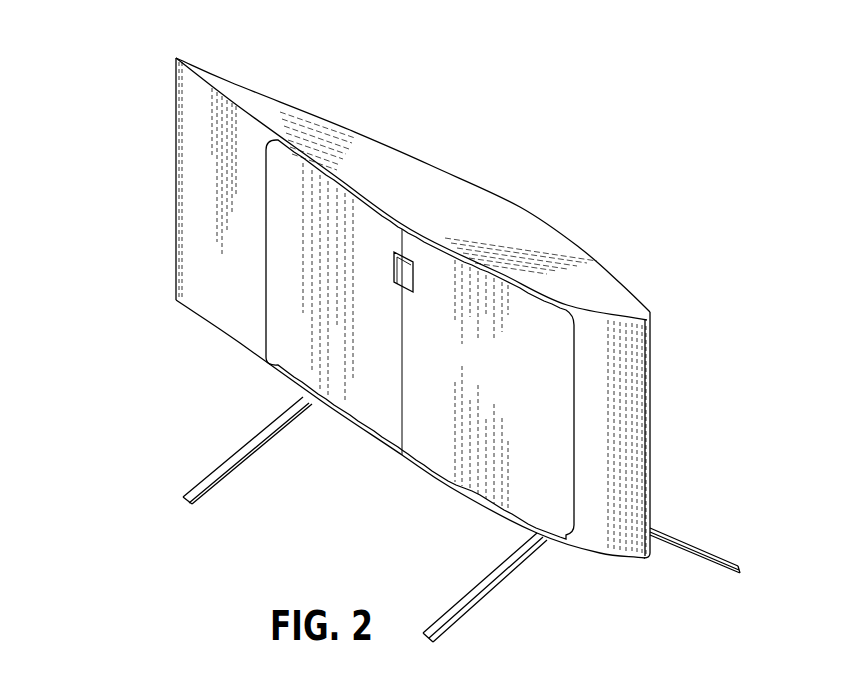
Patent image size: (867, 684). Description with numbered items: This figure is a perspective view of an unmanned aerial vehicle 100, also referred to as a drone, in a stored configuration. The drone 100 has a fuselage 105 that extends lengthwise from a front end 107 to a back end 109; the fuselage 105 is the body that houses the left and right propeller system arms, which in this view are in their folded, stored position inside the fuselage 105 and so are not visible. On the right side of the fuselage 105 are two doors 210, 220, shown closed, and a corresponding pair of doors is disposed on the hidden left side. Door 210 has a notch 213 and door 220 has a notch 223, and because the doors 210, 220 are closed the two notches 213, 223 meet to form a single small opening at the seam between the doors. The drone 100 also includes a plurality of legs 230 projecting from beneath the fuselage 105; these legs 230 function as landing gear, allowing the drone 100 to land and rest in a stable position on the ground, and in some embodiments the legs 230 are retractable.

The unmanned aerial vehicle 100 is at (452, 115).
The fuselage 105 is at (502, 202).
The front end 107 is at (651, 322).
The back end 109 is at (177, 58).
The door 210 is at (362, 428).
The notch 213 is at (393, 270).
The door 220 is at (446, 472).
The notch 223 is at (406, 258).
The legs 230 is at (247, 440).